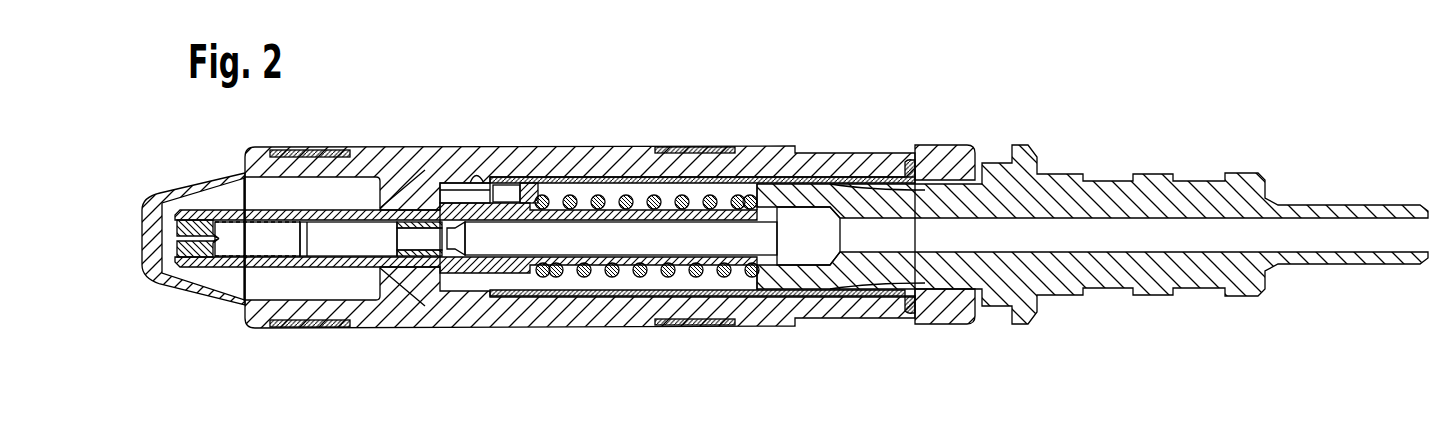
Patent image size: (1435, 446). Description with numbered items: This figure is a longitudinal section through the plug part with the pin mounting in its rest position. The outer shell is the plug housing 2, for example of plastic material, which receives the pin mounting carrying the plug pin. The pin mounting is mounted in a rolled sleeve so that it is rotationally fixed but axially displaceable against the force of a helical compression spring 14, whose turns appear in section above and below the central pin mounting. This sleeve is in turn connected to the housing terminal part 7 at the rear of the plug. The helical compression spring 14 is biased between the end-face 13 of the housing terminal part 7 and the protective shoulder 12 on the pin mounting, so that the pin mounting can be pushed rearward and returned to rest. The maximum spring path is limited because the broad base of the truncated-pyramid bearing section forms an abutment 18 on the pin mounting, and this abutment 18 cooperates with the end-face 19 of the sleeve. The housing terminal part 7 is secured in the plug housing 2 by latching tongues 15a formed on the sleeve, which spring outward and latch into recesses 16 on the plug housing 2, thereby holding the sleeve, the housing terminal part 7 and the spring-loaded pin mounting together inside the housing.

The plug housing 2 is at (402, 318).
The housing terminal part 7 is at (1157, 284).
The protective shoulder 12 is at (532, 293).
The end-face 13 is at (780, 286).
The helical compression spring 14 is at (617, 300).
The latching tongues 15a is at (849, 293).
The recesses 16 is at (906, 292).
The abutment 18 is at (450, 181).
The end-face 19 is at (483, 180).